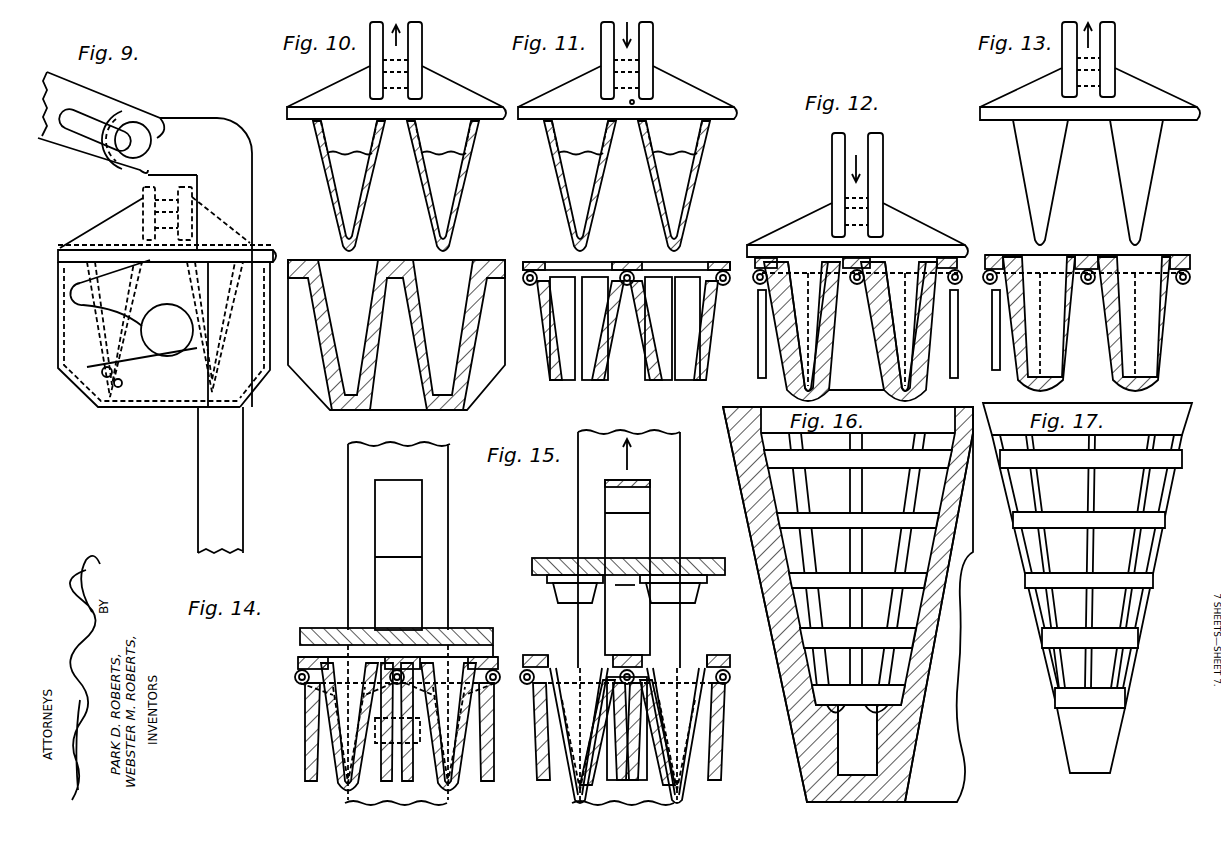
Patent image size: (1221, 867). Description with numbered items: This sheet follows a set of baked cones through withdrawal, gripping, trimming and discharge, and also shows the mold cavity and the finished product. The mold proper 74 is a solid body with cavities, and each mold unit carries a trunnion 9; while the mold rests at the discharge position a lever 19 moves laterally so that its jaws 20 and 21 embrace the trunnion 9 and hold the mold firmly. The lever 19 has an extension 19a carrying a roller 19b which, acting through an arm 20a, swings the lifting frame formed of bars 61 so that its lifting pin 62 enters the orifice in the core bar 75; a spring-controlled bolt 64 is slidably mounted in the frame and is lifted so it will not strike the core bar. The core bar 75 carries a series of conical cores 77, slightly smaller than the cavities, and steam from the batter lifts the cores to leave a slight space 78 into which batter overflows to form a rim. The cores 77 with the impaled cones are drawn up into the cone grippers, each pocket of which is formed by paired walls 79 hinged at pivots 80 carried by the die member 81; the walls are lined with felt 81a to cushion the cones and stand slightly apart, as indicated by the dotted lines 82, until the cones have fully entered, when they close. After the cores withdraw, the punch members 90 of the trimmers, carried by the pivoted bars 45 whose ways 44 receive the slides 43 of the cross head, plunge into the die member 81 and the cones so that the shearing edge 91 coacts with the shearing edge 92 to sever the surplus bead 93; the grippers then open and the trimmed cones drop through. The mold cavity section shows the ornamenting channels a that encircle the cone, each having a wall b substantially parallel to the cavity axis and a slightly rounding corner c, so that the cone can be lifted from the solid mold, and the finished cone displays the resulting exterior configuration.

In FIG. 9, the trunnion 9 is at (170, 346).
In FIG. 9, the lever 19 is at (240, 462).
In FIG. 9, the extension 19a is at (235, 162).
In FIG. 9, the roller 19b is at (134, 132).
In FIG. 9, the jaw 20 is at (130, 313).
In FIG. 9, the arm 20a is at (86, 158).
In FIG. 9, the jaw 21 is at (103, 372).
In FIG. 14, the slides 43 is at (382, 575).
In FIG. 15, the slides 43 is at (613, 514).
In FIG. 14, the ways 44 is at (378, 536).
In FIG. 15, the ways 44 is at (605, 485).
In FIG. 14, the bars 45 is at (348, 522).
In FIG. 15, the bars 45 is at (578, 477).
In FIG. 9, the bars of lifting frame 61 is at (190, 186).
In FIG. 10, the bars of lifting frame 61 is at (422, 32).
In FIG. 11, the bars of lifting frame 61 is at (653, 32).
In FIG. 12, the bars of lifting frame 61 is at (883, 174).
In FIG. 13, the bars of lifting frame 61 is at (1115, 31).
In FIG. 9, the lifting pin 62 is at (163, 200).
In FIG. 10, the lifting pin 62 is at (410, 65).
In FIG. 11, the lifting pin 62 is at (641, 65).
In FIG. 12, the lifting pin 62 is at (872, 206).
In FIG. 13, the lifting pin 62 is at (1108, 66).
In FIG. 9, the bolt 64 is at (143, 196).
In FIG. 10, the bolt 64 is at (372, 62).
In FIG. 11, the bolt 64 is at (603, 62).
In FIG. 12, the bolt 64 is at (832, 166).
In FIG. 13, the bolt 64 is at (1062, 61).
In FIG. 9, the mold proper 74 is at (76, 394).
In FIG. 10, the mold proper 74 is at (318, 383).
In FIG. 16, the mold proper 74 is at (794, 708).
In FIG. 9, the core bar 75 is at (167, 229).
In FIG. 10, the core bar 75 is at (333, 93).
In FIG. 11, the core bar 75 is at (564, 93).
In FIG. 12, the core bar 75 is at (801, 226).
In FIG. 13, the core bar 75 is at (1010, 97).
In FIG. 9, the conical cores 77 is at (75, 253).
In FIG. 10, the conical cores 77 is at (440, 211).
In FIG. 11, the conical cores 77 is at (671, 211).
In FIG. 12, the conical cores 77 is at (838, 326).
In FIG. 13, the conical cores 77 is at (1125, 168).
In FIG. 15, the conical cores 77 is at (630, 735).
In FIG. 9, the space 78 is at (273, 256).
In FIG. 11, the walls 79 is at (546, 356).
In FIG. 12, the walls 79 is at (778, 352).
In FIG. 13, the walls 79 is at (1012, 354).
In FIG. 14, the walls 79 is at (308, 754).
In FIG. 15, the walls 79 is at (535, 752).
In FIG. 11, the hinges 80 is at (528, 283).
In FIG. 12, the hinges 80 is at (760, 284).
In FIG. 13, the hinges 80 is at (1183, 285).
In FIG. 14, the hinges 80 is at (295, 678).
In FIG. 15, the hinges 80 is at (728, 676).
In FIG. 11, the die member 81 is at (533, 262).
In FIG. 12, the die member 81 is at (960, 262).
In FIG. 13, the die member 81 is at (988, 256).
In FIG. 14, the die member 81 is at (297, 661).
In FIG. 15, the die member 81 is at (533, 655).
In FIG. 12, the lining 81a is at (835, 373).
In FIG. 13, the lining 81a is at (1003, 371).
In FIG. 14, the lining 81a is at (310, 719).
In FIG. 15, the lining 81a is at (533, 722).
In FIG. 12, the dotted lines 82 is at (790, 320).
In FIG. 13, the dotted lines 82 is at (980, 330).
In FIG. 14, the punch members 90 is at (331, 628).
In FIG. 15, the punch members 90 is at (550, 558).
In FIG. 14, the shearing edge 91 is at (397, 652).
In FIG. 15, the shearing edge 91 is at (625, 586).
In FIG. 12, the shearing edge 92 is at (777, 258).
In FIG. 13, the shearing edge 92 is at (1005, 256).
In FIG. 14, the shearing edge 92 is at (342, 657).
In FIG. 15, the shearing edge 92 is at (544, 656).
In FIG. 14, the surplus bead 93 is at (485, 657).
In FIG. 16, the channels a is at (780, 462).
In FIG. 16, the wall of channel b is at (788, 518).
In FIG. 16, the rounding corner c is at (857, 737).